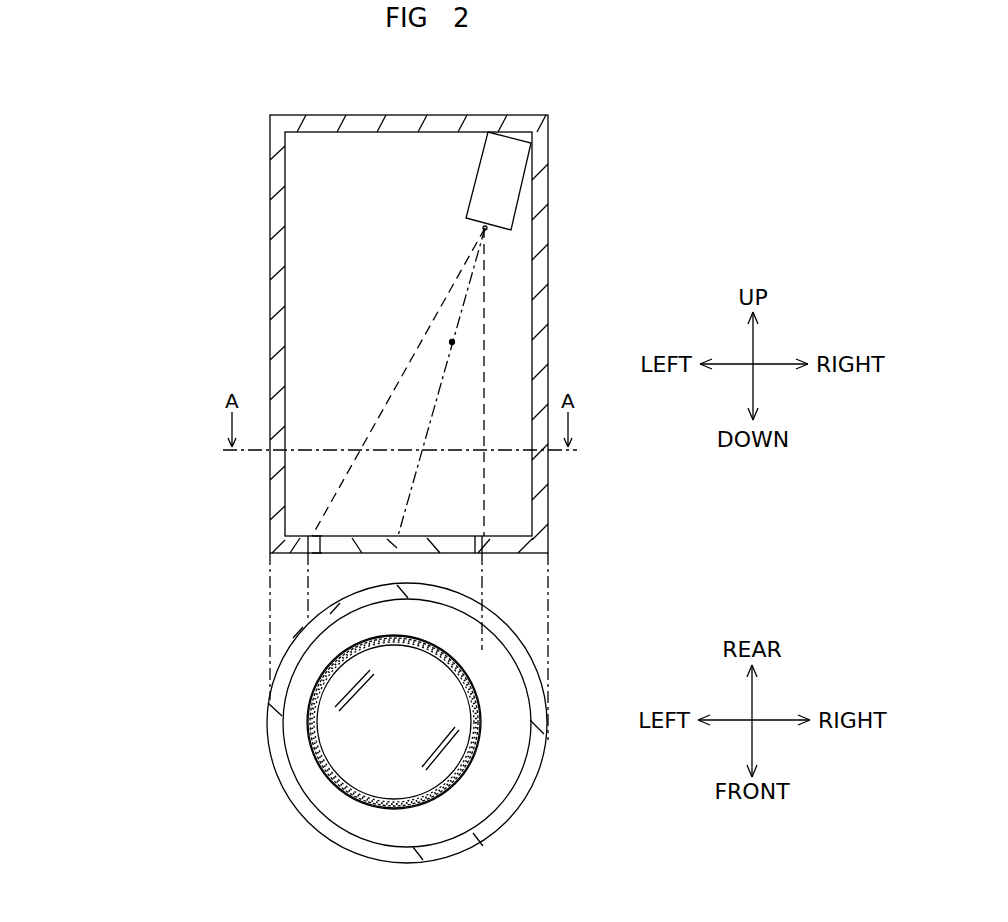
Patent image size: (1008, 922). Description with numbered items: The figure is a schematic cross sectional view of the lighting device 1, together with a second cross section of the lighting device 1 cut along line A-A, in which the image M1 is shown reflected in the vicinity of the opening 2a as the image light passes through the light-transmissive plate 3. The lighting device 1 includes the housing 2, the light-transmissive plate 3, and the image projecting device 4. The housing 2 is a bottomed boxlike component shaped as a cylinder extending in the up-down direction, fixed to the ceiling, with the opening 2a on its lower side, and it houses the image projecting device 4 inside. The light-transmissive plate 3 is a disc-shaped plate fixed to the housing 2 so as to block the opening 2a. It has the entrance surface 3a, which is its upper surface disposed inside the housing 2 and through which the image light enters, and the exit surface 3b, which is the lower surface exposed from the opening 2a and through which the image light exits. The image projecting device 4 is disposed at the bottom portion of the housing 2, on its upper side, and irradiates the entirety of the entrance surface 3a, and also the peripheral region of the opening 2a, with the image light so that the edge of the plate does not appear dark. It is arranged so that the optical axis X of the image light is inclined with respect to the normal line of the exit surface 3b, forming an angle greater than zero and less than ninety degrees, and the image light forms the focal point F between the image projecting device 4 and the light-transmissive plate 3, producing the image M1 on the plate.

The lighting device 1 is at (686, 128).
The housing 2 is at (536, 294).
The opening 2a is at (467, 557).
The light-transmissive plate 3 is at (348, 542).
The entrance surface 3a is at (333, 524).
The exit surface 3b is at (336, 563).
The image projecting device 4 is at (510, 171).
The focal point F is at (456, 341).
The optical axis X is at (437, 397).
The image M1 is at (475, 760).